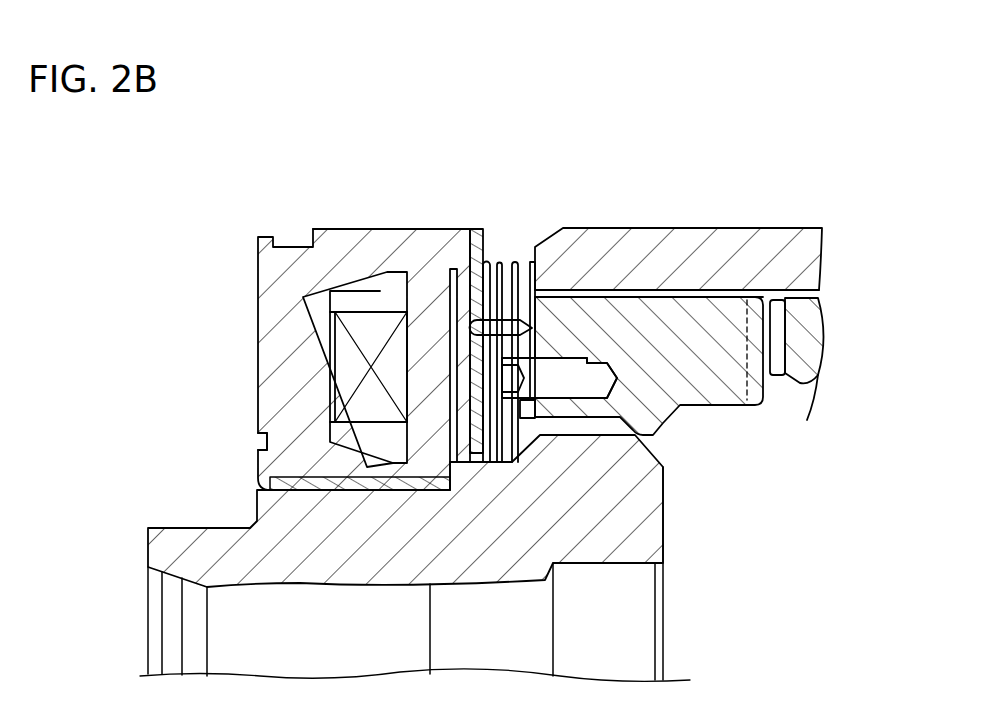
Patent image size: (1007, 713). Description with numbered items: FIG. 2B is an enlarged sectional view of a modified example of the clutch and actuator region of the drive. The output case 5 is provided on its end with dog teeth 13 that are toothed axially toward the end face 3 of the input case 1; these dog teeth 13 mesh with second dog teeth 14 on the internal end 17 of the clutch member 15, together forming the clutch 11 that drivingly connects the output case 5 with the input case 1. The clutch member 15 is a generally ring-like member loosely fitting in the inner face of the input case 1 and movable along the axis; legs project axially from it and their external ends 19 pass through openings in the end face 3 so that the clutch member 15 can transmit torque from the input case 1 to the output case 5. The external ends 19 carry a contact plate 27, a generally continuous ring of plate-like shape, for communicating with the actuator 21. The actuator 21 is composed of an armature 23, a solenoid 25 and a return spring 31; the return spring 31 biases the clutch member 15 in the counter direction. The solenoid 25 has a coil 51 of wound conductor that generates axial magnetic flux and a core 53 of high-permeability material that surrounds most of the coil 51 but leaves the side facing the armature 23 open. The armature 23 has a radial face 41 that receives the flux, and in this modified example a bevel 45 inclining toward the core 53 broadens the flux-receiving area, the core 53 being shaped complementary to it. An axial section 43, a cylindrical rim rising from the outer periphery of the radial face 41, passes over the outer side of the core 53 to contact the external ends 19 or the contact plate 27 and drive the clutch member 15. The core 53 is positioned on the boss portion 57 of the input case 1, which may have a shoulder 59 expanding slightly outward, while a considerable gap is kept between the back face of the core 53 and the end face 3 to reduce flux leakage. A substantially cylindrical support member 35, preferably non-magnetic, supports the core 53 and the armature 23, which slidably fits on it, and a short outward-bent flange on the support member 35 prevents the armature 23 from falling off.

The input case 1 is at (768, 227).
The end face 3 is at (524, 258).
The output case 5 is at (823, 330).
The clutch 11 is at (802, 448).
The dog teeth 13 is at (778, 377).
The second dog teeth 14 is at (747, 388).
The clutch member 15 is at (693, 408).
The internal end 17 is at (752, 288).
The external ends 19 is at (550, 288).
The actuator 21 is at (287, 128).
The armature 23 is at (257, 323).
The solenoid 25 is at (385, 167).
The contact plate 27 is at (480, 227).
The return spring 31 is at (508, 262).
The support member 35 is at (263, 453).
The radial face 41 is at (320, 365).
The axial section 43 is at (403, 228).
The bevel 45 is at (323, 443).
The coil 51 is at (310, 297).
The core 53 is at (380, 272).
The boss portion 57 is at (262, 587).
The shoulder 59 is at (395, 488).